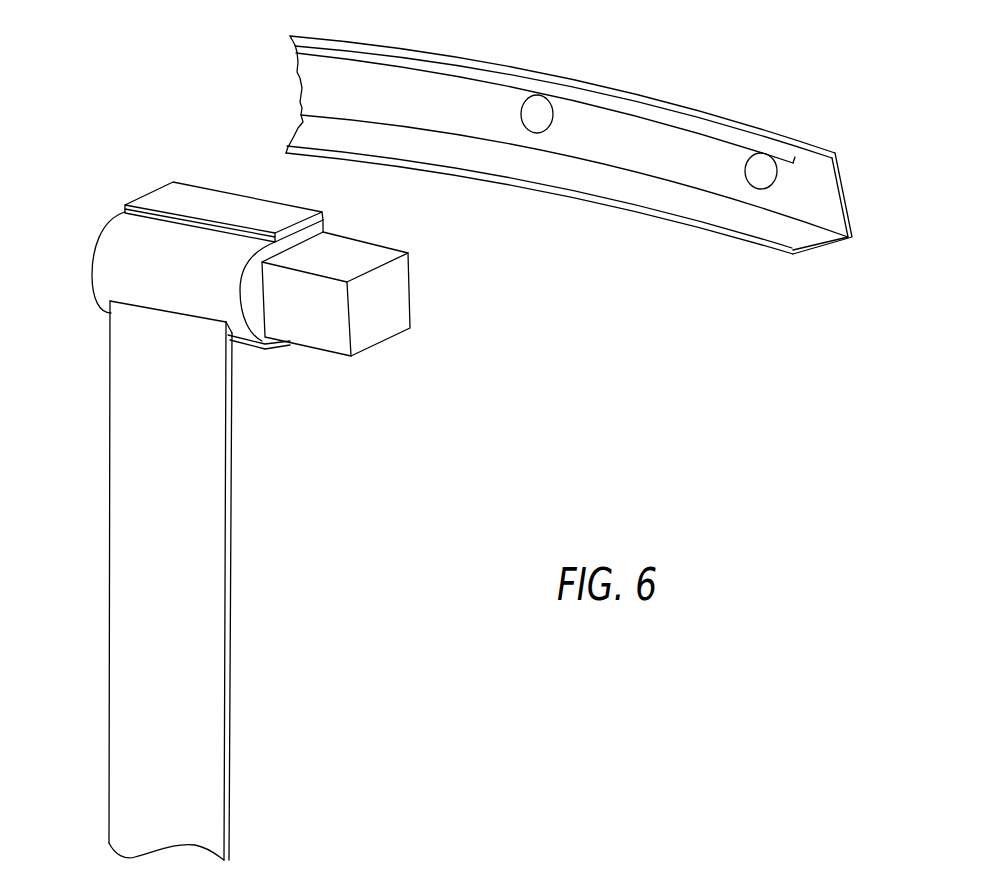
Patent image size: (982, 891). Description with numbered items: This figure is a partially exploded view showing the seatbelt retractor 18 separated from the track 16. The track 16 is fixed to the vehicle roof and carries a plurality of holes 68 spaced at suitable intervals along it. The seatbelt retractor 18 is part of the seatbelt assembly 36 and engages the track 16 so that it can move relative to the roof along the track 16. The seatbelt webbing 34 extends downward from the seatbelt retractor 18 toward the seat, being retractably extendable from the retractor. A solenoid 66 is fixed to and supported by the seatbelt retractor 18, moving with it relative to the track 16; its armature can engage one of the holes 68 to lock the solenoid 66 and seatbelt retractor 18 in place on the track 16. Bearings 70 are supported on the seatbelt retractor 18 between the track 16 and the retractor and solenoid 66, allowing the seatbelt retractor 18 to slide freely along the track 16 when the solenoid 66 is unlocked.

The track 16 is at (630, 90).
The seatbelt retractor 18 is at (97, 243).
The seatbelt webbing 34 is at (232, 594).
The seatbelt assembly 36 is at (87, 327).
The solenoid 66 is at (373, 320).
The holes 68 is at (758, 190).
The bearing 70 is at (210, 205).